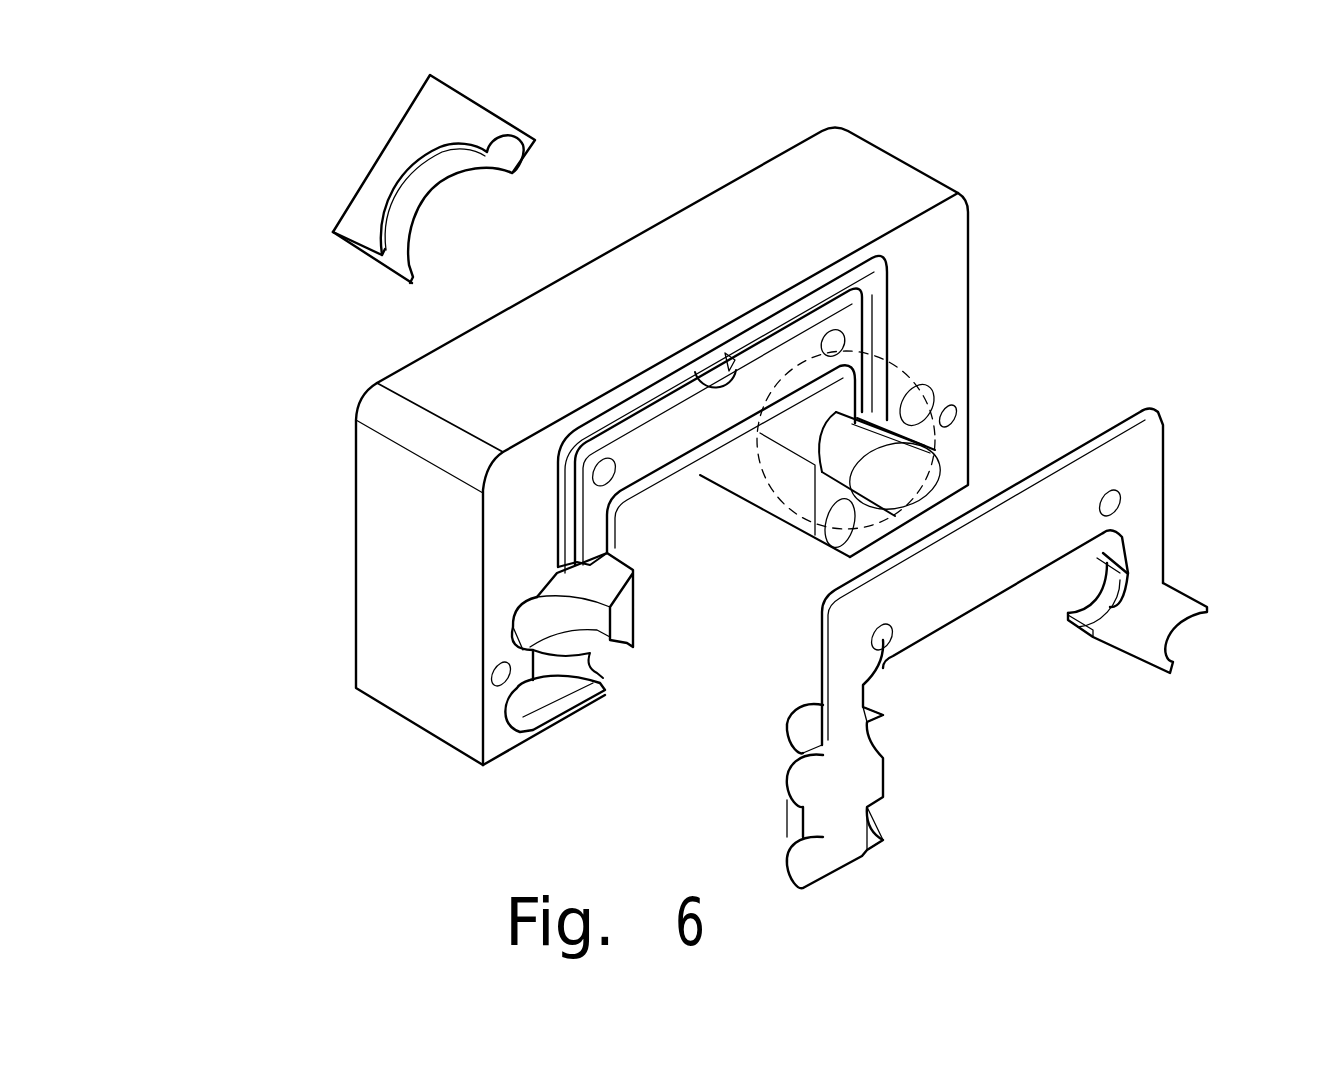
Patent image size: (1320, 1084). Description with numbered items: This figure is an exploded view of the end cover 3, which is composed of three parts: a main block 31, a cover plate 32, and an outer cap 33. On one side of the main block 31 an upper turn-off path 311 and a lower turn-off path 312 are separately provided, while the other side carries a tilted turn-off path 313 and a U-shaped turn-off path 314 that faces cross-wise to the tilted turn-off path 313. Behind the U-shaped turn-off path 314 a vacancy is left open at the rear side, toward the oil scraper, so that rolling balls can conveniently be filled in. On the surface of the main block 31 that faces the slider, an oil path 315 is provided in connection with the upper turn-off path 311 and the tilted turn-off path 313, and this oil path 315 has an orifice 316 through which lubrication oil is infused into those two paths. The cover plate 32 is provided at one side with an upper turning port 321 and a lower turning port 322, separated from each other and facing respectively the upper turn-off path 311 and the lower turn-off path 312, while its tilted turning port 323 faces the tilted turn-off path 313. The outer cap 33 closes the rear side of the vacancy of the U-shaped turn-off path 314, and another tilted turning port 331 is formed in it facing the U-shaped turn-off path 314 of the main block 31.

The end cover 3 is at (238, 412).
The main block 31 is at (862, 202).
The upper turn-off path 311 is at (583, 582).
The lower turn-off path 312 is at (565, 693).
The tilted turn-off path 313 is at (920, 478).
The U-shaped turn-off path 314 is at (918, 400).
The oil path 315 is at (814, 307).
The orifice 316 is at (720, 372).
The cover plate 32 is at (1127, 463).
The upper turning port 321 is at (880, 732).
The lower turning port 322 is at (867, 812).
The tilted turning port 323 is at (1120, 605).
The outer cap 33 is at (363, 223).
The tilted turning port 331 is at (433, 168).